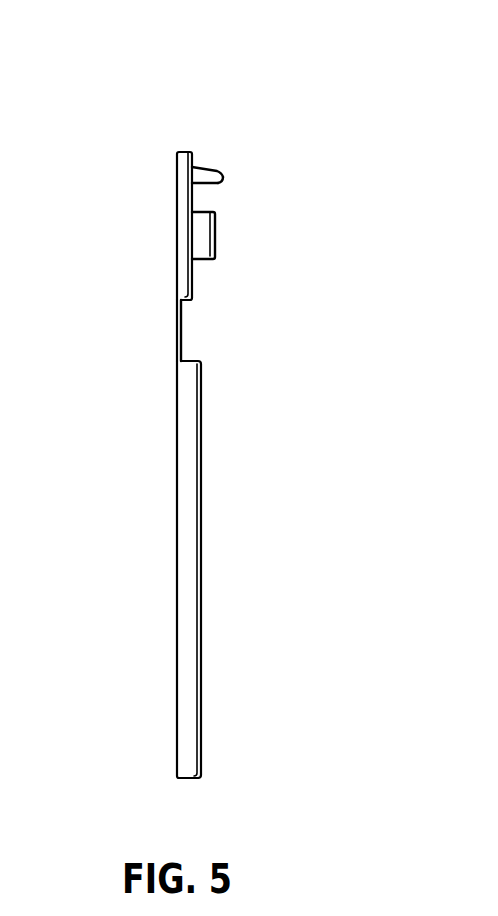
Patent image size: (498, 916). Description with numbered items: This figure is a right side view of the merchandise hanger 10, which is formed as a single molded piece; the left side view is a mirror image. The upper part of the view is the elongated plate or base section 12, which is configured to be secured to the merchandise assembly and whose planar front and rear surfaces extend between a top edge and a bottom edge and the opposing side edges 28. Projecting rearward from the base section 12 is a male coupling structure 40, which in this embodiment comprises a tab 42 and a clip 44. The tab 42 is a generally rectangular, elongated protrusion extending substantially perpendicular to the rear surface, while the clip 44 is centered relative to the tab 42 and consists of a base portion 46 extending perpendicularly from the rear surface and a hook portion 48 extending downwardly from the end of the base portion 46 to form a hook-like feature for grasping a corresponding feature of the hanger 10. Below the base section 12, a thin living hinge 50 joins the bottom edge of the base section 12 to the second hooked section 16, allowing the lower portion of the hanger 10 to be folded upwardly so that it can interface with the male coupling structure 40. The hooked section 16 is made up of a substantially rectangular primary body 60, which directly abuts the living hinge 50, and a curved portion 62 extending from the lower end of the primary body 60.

The hanger 10 is at (132, 78).
The base section 12 is at (182, 225).
The second hooked section 16 is at (187, 585).
The opposing side edges 28 is at (181, 277).
The male coupling structure 40 is at (219, 210).
The tab 42 is at (202, 240).
The clip 44 is at (197, 167).
The base portion 46 is at (213, 171).
The hook portion 48 is at (218, 183).
The living hinge 50 is at (183, 331).
The primary body 60 is at (187, 483).
The curved portion 62 is at (187, 739).